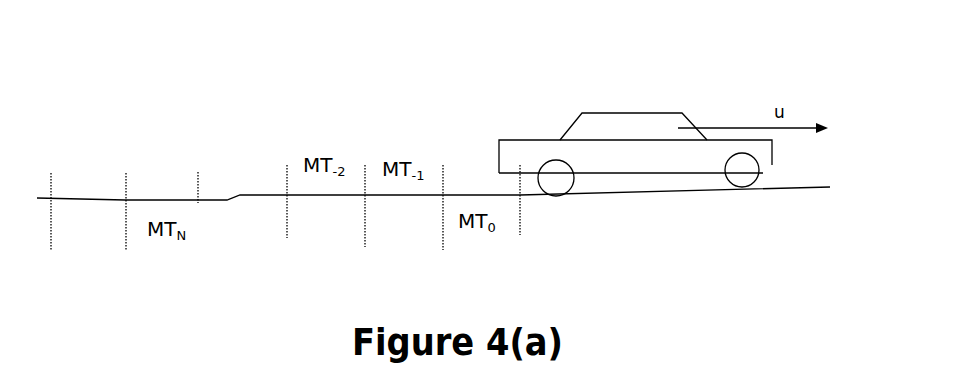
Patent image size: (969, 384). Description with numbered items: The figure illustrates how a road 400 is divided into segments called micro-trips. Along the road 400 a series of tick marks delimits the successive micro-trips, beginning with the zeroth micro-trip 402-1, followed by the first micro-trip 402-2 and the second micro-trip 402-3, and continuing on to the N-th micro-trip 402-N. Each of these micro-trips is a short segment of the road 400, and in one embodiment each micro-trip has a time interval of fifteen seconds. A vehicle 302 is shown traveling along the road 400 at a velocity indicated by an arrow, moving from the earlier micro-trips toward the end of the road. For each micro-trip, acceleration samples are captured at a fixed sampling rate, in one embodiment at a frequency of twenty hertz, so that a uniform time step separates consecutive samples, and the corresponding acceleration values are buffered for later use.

The vehicle 302 is at (620, 112).
The road 400 is at (620, 192).
The micro-trip MT_N 402-N is at (164, 181).
The micro-trip MT_2 402-3 is at (302, 167).
The micro-trip MT_1 402-2 is at (407, 223).
The micro-trip MT_0 402-1 is at (490, 177).